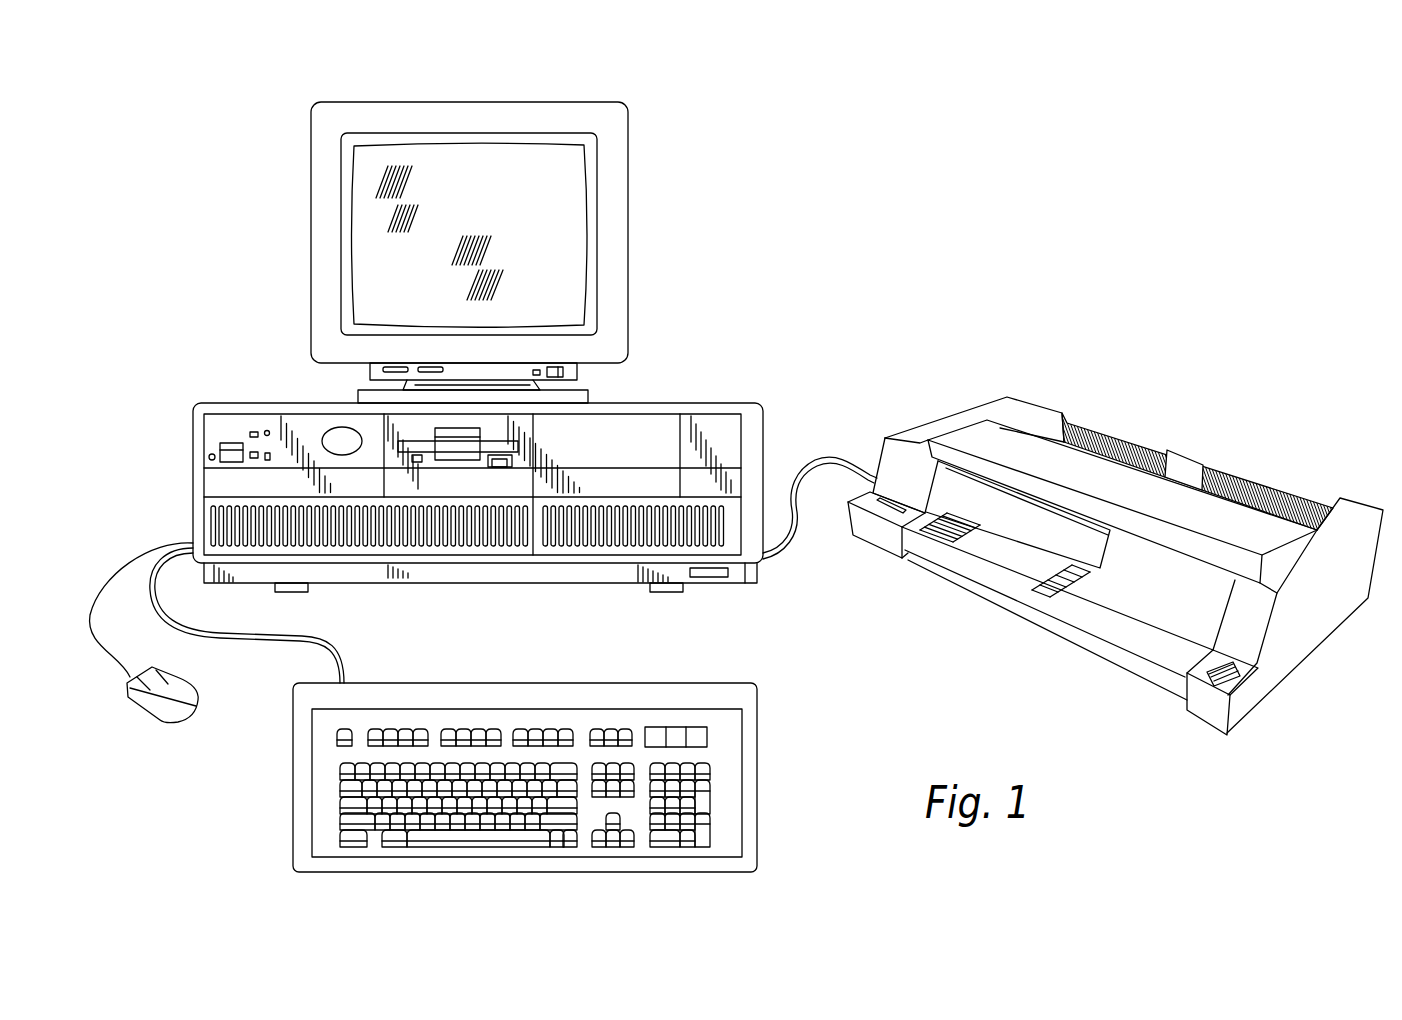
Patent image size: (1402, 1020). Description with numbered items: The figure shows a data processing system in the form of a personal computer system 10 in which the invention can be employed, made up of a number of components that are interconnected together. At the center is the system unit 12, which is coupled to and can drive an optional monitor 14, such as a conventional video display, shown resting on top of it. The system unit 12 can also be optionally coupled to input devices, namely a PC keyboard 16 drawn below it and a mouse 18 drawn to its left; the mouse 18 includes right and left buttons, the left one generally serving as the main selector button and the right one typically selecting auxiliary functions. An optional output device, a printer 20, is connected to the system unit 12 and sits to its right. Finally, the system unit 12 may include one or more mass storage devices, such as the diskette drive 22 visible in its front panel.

The personal computer system 10 is at (836, 217).
The system unit 12 is at (478, 475).
The monitor 14 is at (640, 260).
The PC keyboard 16 is at (635, 672).
The mouse 18 is at (148, 706).
The printer 20 is at (942, 400).
The diskette drive 22 is at (465, 455).